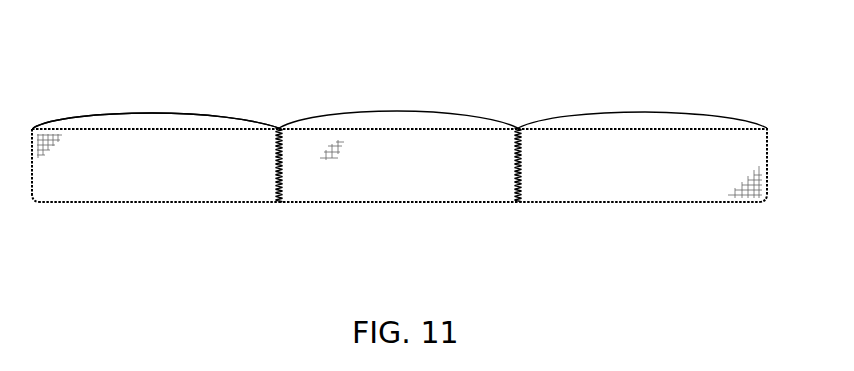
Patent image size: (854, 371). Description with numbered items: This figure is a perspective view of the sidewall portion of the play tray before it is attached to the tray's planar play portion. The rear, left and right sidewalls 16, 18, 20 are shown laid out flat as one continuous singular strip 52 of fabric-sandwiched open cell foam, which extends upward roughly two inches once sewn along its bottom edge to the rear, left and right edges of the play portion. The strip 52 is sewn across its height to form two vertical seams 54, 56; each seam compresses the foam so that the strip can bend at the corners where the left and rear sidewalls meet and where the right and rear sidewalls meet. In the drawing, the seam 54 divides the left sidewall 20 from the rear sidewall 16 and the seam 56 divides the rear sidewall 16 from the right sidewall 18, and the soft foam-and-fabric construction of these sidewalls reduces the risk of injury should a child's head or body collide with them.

The rear sidewall 16 is at (388, 179).
The left sidewall 18 is at (660, 178).
The right sidewall 20 is at (132, 173).
The singular strip 52 is at (153, 106).
The vertical seam 54 is at (277, 155).
The vertical seam 56 is at (517, 150).